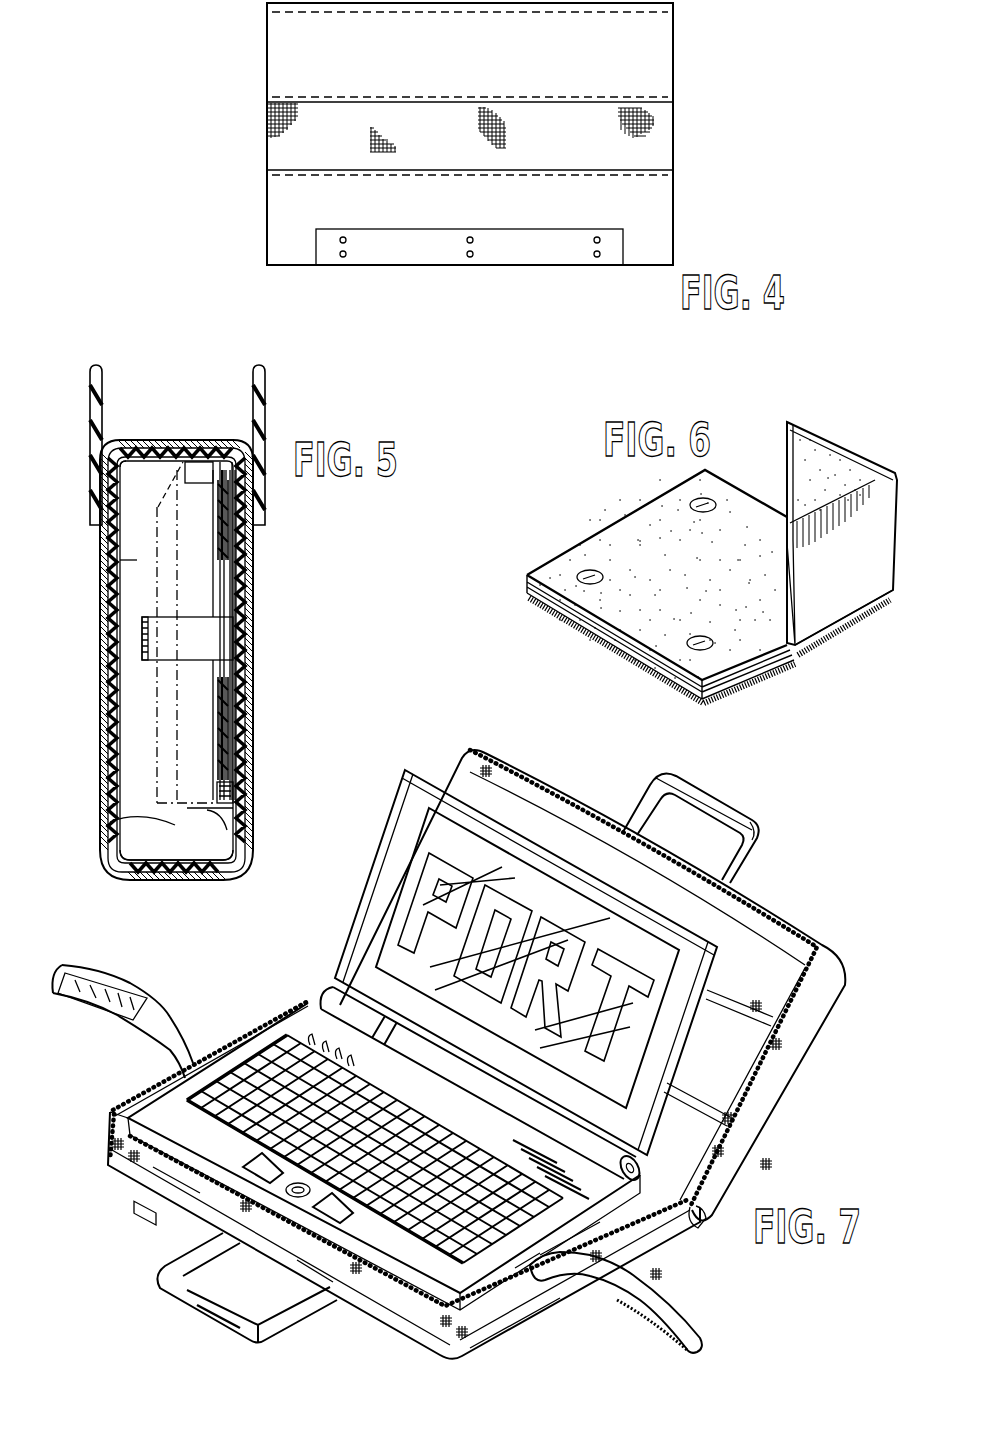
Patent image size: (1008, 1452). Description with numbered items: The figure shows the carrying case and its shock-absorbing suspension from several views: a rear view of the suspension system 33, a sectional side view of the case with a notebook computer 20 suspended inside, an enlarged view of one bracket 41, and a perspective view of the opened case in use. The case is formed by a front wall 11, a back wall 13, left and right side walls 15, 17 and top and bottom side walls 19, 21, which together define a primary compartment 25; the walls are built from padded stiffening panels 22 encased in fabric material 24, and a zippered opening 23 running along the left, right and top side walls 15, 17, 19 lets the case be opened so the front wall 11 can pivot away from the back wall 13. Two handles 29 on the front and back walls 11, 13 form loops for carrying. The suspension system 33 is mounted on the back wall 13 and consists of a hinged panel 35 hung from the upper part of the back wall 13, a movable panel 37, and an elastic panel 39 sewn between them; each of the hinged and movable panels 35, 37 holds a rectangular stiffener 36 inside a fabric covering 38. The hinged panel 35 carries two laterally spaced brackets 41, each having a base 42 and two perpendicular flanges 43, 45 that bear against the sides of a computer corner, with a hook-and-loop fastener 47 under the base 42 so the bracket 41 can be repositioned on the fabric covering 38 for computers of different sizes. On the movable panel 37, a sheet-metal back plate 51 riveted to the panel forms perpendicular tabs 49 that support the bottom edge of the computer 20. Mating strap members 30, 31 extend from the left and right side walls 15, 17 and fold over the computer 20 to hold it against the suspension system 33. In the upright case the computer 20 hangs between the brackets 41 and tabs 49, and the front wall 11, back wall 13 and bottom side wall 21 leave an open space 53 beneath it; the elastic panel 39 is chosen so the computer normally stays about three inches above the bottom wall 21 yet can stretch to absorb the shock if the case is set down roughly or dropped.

In FIG. 5, the front wall 11 is at (145, 644).
In FIG. 7, the front wall 11 is at (601, 989).
In FIG. 5, the back wall 13 is at (276, 631).
In FIG. 7, the left side wall 15 is at (547, 1318).
In FIG. 7, the right side wall 17 is at (243, 1040).
In FIG. 5, the top side wall 19 is at (118, 440).
In FIG. 7, the top side wall 19 is at (410, 1171).
In FIG. 5, the notebook computer 20 is at (153, 727).
In FIG. 7, the notebook computer 20 is at (308, 997).
In FIG. 5, the bottom side wall 21 is at (140, 878).
In FIG. 5, the stiffening panels 22 is at (100, 522).
In FIG. 7, the zippered opening 23 is at (763, 1048).
In FIG. 5, the fabric material 24 is at (102, 543).
In FIG. 5, the primary compartment 25 is at (110, 572).
In FIG. 5, the handles 29 is at (90, 397).
In FIG. 7, the handles 29 is at (764, 850).
In FIG. 5, the mating strap member 30 is at (142, 622).
In FIG. 7, the mating strap member 30 is at (95, 1010).
In FIG. 5, the mating strap member 31 is at (136, 659).
In FIG. 7, the mating strap member 31 is at (673, 1310).
In FIG. 4, the suspension system 33 is at (451, 155).
In FIG. 4, the hinged panel 35 is at (676, 51).
In FIG. 5, the hinged panel 35 is at (218, 556).
In FIG. 5, the rectangular stiffener 36 is at (222, 540).
In FIG. 4, the movable panel 37 is at (676, 193).
In FIG. 5, the movable panel 37 is at (234, 743).
In FIG. 5, the fabric covering 38 is at (225, 566).
In FIG. 4, the elastic panel 39 is at (660, 147).
In FIG. 5, the elastic panel 39 is at (235, 600).
In FIG. 5, the bracket 41 is at (197, 460).
In FIG. 6, the bracket 41 is at (708, 596).
In FIG. 7, the bracket 41 is at (112, 1117).
In FIG. 6, the base 42 is at (595, 618).
In FIG. 6, the flange 43 is at (842, 504).
In FIG. 6, the flange 45 is at (853, 597).
In FIG. 6, the hook-and-loop fastener 47 is at (738, 678).
In FIG. 5, the tabs 49 is at (237, 830).
In FIG. 4, the back plate 51 is at (433, 262).
In FIG. 5, the back plate 51 is at (235, 793).
In FIG. 5, the open space 53 is at (110, 822).
In FIG. 7, the open space 53 is at (386, 827).